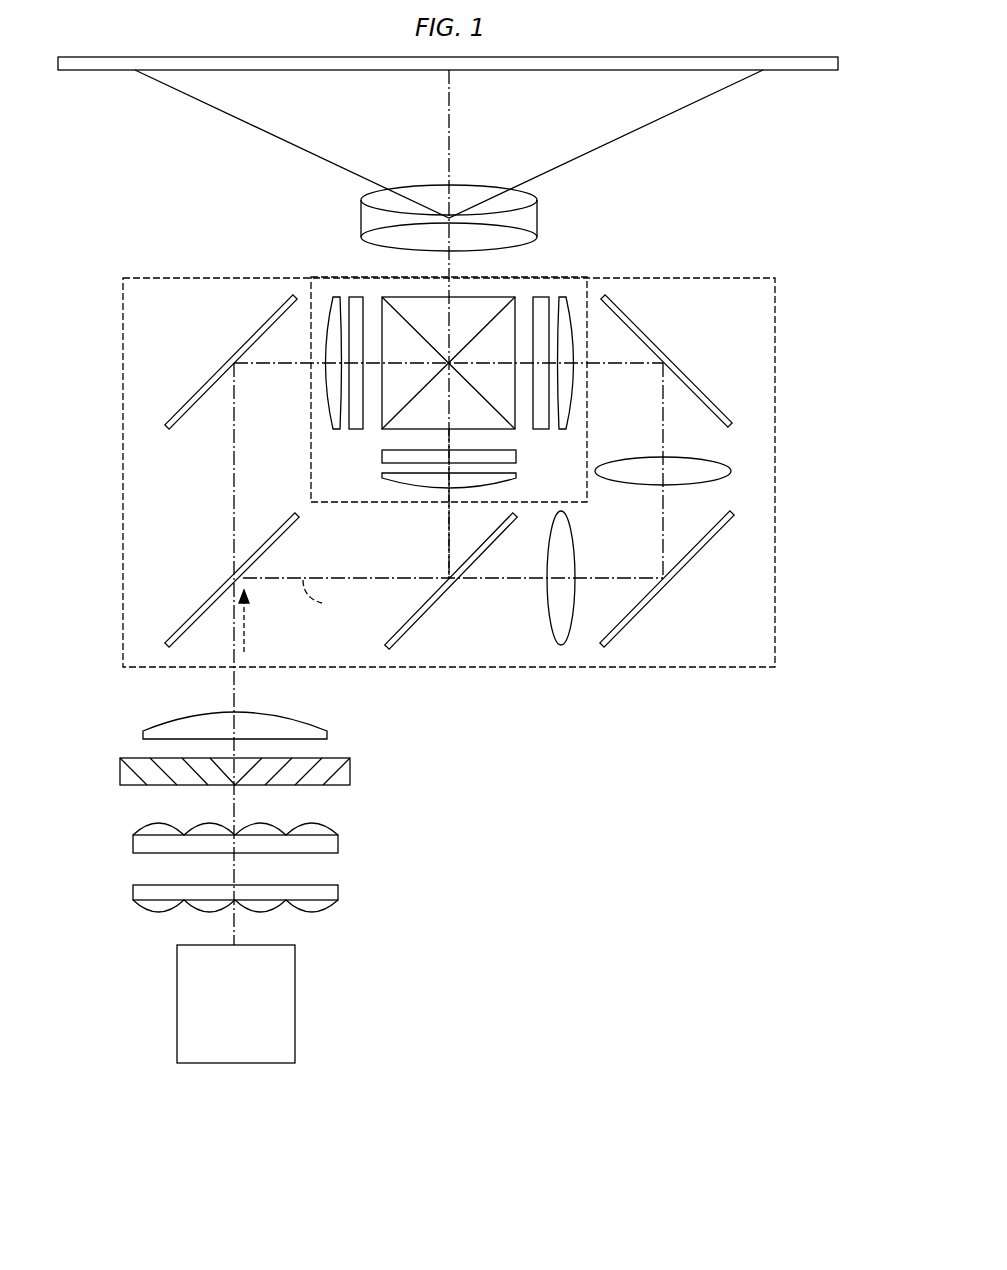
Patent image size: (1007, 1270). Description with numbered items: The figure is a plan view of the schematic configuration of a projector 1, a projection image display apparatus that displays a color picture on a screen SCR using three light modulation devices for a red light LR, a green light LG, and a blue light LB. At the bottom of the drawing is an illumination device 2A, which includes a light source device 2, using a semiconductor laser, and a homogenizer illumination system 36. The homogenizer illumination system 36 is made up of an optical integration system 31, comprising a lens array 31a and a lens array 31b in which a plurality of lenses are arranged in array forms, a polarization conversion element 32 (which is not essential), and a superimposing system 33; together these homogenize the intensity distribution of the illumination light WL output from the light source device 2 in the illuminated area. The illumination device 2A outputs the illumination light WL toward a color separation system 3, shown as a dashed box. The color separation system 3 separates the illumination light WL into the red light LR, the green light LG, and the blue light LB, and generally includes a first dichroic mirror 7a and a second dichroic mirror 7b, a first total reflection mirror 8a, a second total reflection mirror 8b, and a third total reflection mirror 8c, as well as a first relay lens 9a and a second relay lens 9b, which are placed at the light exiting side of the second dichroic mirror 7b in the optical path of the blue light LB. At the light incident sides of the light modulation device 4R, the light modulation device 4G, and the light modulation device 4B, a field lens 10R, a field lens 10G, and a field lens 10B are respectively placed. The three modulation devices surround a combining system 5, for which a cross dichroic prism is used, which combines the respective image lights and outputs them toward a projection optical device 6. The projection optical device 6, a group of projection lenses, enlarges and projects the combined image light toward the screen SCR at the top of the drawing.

The projector 1 is at (780, 258).
The screen SCR is at (805, 72).
The projection optical device 6 is at (430, 194).
The combining system 5 is at (471, 298).
The light modulation device 4R is at (356, 296).
The light modulation device 4G is at (382, 457).
The light modulation device 4B is at (542, 296).
The field lens 10R is at (333, 296).
The field lens 10G is at (385, 485).
The field lens 10B is at (566, 296).
The color separation system 3 is at (123, 419).
The first total reflection mirror 8a is at (208, 380).
The second total reflection mirror 8b is at (691, 566).
The third total reflection mirror 8c is at (693, 380).
The first dichroic mirror 7a is at (197, 612).
The second dichroic mirror 7b is at (430, 612).
The first relay lens 9a is at (547, 598).
The second relay lens 9b is at (720, 460).
The red light LR is at (234, 491).
The green light LG is at (449, 536).
The blue light LB is at (663, 529).
The illumination light WL is at (248, 632).
The illumination device 2A is at (344, 881).
The light source device 2 is at (343, 1004).
The homogenizer illumination system 36 is at (317, 806).
The optical integration system 31 is at (297, 867).
The lens array 31a is at (274, 897).
The lens array 31b is at (339, 845).
The polarization conversion element 32 is at (351, 771).
The superimposing system 33 is at (328, 716).